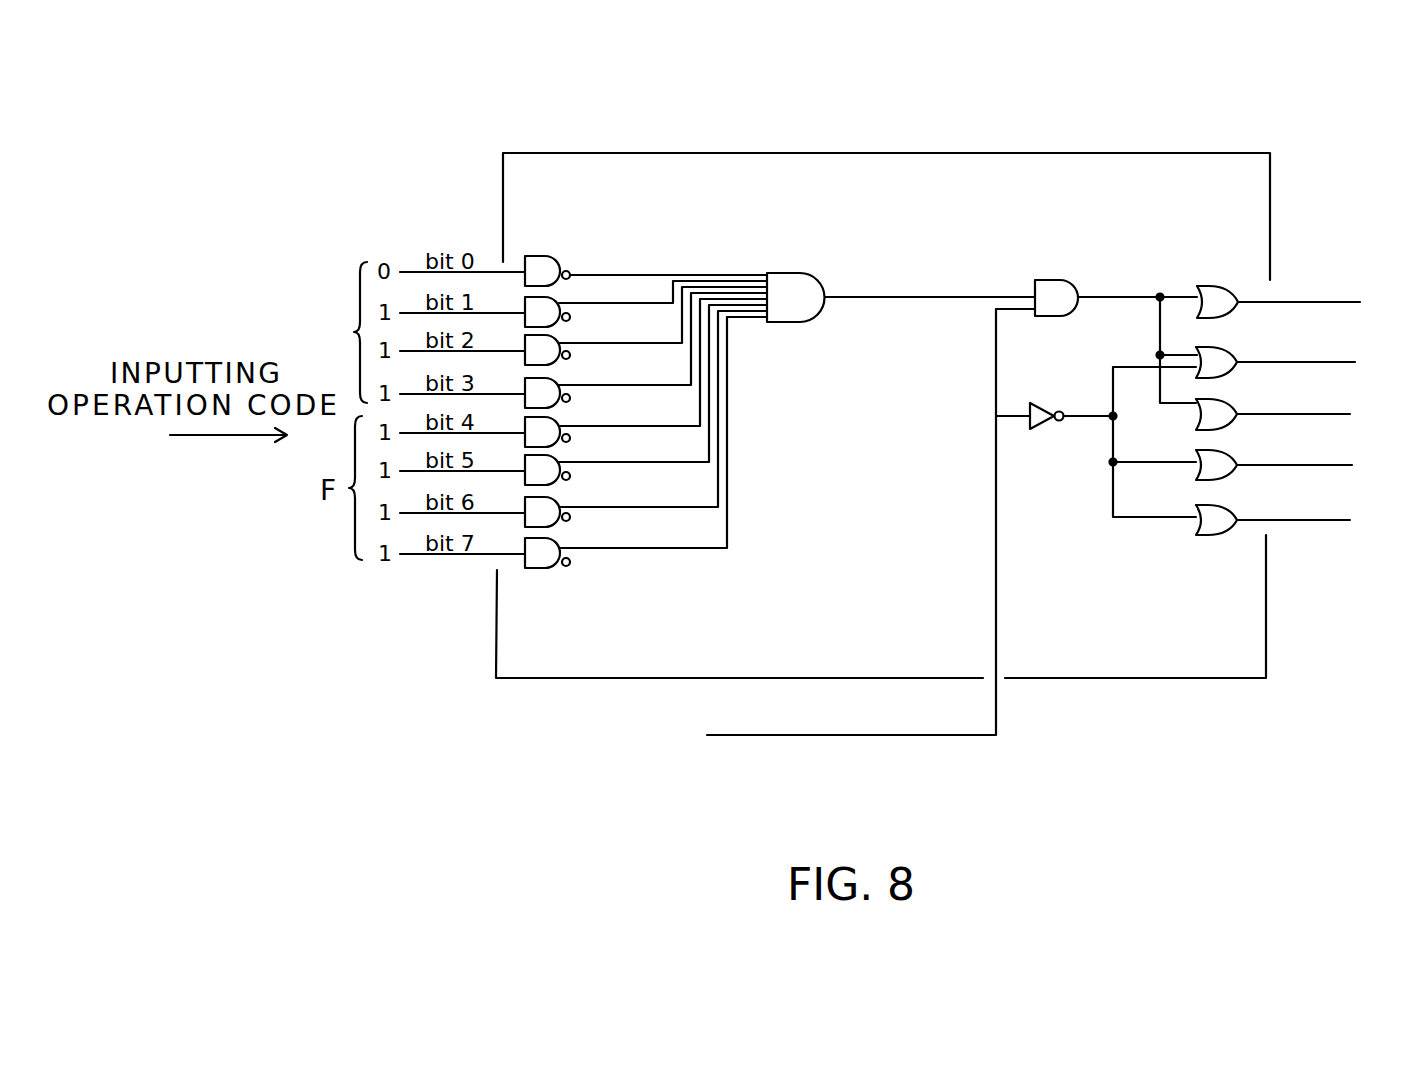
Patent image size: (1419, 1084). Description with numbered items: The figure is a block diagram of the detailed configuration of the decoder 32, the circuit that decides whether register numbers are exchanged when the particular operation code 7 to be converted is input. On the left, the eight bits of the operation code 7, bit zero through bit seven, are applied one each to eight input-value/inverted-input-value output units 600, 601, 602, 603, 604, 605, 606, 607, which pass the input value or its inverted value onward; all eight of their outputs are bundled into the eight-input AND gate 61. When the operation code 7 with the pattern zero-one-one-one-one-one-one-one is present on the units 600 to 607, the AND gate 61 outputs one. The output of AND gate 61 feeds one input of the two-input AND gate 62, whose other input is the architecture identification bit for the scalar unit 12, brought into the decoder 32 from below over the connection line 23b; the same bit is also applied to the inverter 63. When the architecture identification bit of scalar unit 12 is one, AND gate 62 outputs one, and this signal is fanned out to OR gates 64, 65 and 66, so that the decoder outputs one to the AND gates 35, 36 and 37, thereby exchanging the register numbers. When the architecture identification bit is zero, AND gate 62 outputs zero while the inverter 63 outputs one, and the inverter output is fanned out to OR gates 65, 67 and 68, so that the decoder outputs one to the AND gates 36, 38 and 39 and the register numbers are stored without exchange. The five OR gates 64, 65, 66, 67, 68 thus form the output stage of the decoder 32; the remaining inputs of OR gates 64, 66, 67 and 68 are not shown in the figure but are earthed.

The decoder 32 is at (1032, 153).
The input-value/inverted-input-value output unit 600 is at (566, 267).
The input-value/inverted-input-value output unit 601 is at (570, 319).
The input-value/inverted-input-value output unit 602 is at (570, 357).
The input-value/inverted-input-value output unit 603 is at (570, 400).
The input-value/inverted-input-value output unit 604 is at (570, 440).
The input-value/inverted-input-value output unit 605 is at (570, 478).
The input-value/inverted-input-value output unit 606 is at (570, 519).
The input-value/inverted-input-value output unit 607 is at (566, 566).
The 8-input AND gate 61 is at (808, 273).
The 2-input AND gate 62 is at (1062, 280).
The inverter 63 is at (1042, 403).
The OR gate 64 is at (1233, 277).
The OR gate 65 is at (1224, 347).
The OR gate 66 is at (1224, 399).
The OR gate 67 is at (1224, 450).
The OR gate 68 is at (1224, 505).
The connection line 23b is at (871, 524).
The scalar unit 12 is at (601, 766).
The operation code 7 is at (347, 332).
The AND gate 35 is at (1368, 285).
The AND gate 36 is at (1368, 350).
The AND gate 37 is at (1363, 400).
The AND gate 38 is at (1363, 450).
The AND gate 39 is at (1363, 505).